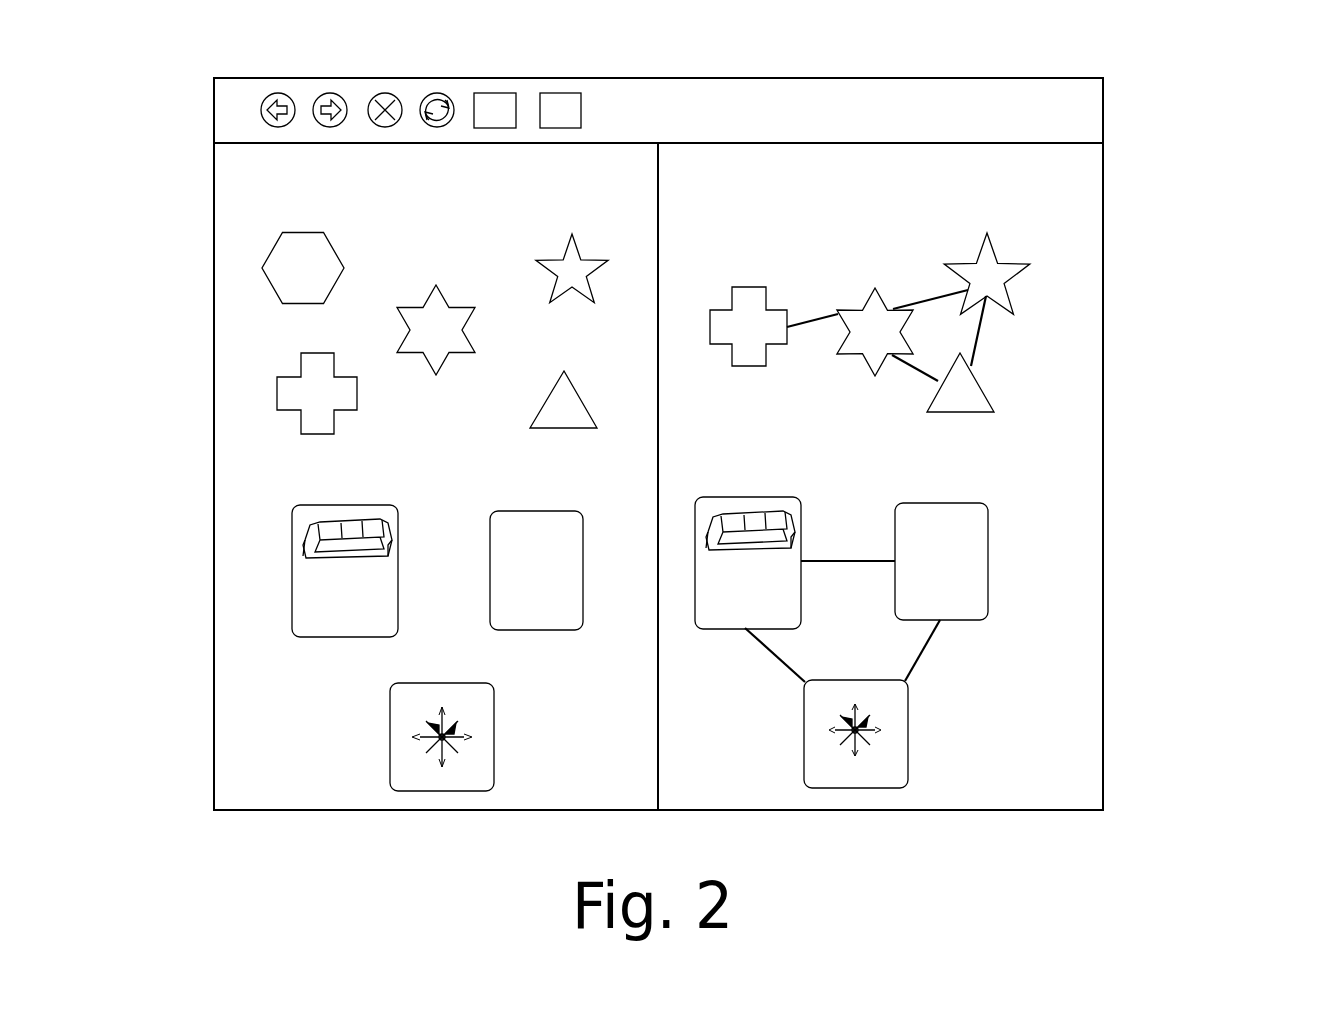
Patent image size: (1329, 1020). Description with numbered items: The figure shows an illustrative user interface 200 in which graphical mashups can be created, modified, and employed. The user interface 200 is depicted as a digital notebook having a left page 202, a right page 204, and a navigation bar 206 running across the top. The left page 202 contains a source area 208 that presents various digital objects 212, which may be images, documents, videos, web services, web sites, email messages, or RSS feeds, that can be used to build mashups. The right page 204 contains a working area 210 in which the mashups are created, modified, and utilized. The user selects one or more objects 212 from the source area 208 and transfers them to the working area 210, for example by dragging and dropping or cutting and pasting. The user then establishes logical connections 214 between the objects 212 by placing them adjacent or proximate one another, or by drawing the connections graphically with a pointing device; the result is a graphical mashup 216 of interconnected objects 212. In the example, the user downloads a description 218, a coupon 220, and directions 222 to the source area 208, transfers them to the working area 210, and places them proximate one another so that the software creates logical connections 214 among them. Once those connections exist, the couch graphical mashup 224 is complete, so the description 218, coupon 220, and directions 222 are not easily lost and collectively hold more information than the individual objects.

The user interface 200 is at (1216, 80).
The left page 202 is at (236, 371).
The right page 204 is at (1090, 368).
The navigation bar 206 is at (1050, 77).
The source area 208 is at (465, 177).
The working area 210 is at (862, 177).
The digital objects 212 is at (335, 250).
The logical connections 214 is at (935, 294).
The graphical mashup 216 is at (990, 242).
The description 218 is at (372, 505).
The coupon 220 is at (548, 511).
The directions 222 is at (495, 727).
The couch graphical mashup 224 is at (996, 466).